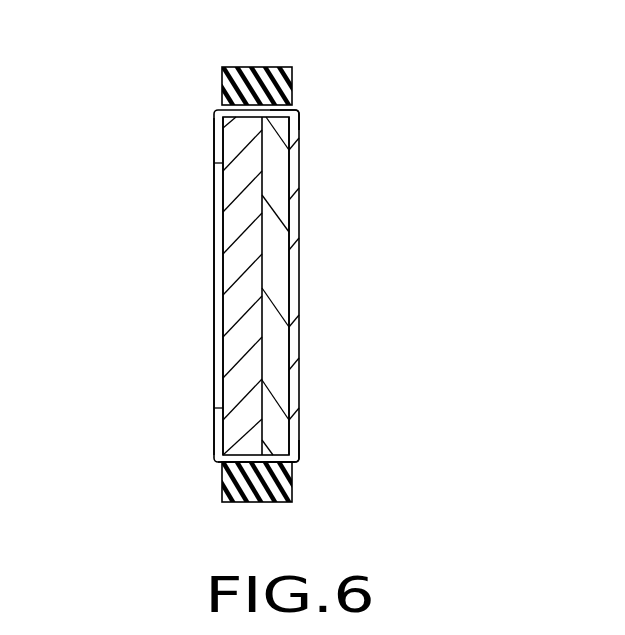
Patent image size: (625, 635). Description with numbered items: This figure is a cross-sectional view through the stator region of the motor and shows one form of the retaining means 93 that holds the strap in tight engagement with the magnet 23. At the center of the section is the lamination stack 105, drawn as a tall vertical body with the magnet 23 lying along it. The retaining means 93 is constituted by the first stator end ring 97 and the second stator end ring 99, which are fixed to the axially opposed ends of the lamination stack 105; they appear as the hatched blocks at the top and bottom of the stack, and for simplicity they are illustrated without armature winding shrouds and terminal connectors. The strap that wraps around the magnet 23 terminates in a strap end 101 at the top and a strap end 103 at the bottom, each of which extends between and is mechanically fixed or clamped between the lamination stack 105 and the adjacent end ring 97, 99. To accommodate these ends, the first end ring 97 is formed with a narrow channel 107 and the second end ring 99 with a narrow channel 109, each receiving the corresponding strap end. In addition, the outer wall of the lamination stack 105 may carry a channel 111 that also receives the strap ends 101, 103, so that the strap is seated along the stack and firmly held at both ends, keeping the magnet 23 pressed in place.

The first retaining means 93 is at (184, 62).
The first stator end ring 97 is at (283, 78).
The second stator end ring 99 is at (267, 490).
The strap end 101 is at (213, 140).
The strap end 103 is at (215, 428).
The lamination stack 105 is at (238, 252).
The narrow channel 107 is at (292, 110).
The narrow channel 109 is at (225, 452).
The channel 111 is at (223, 303).
The magnet 23 is at (282, 278).